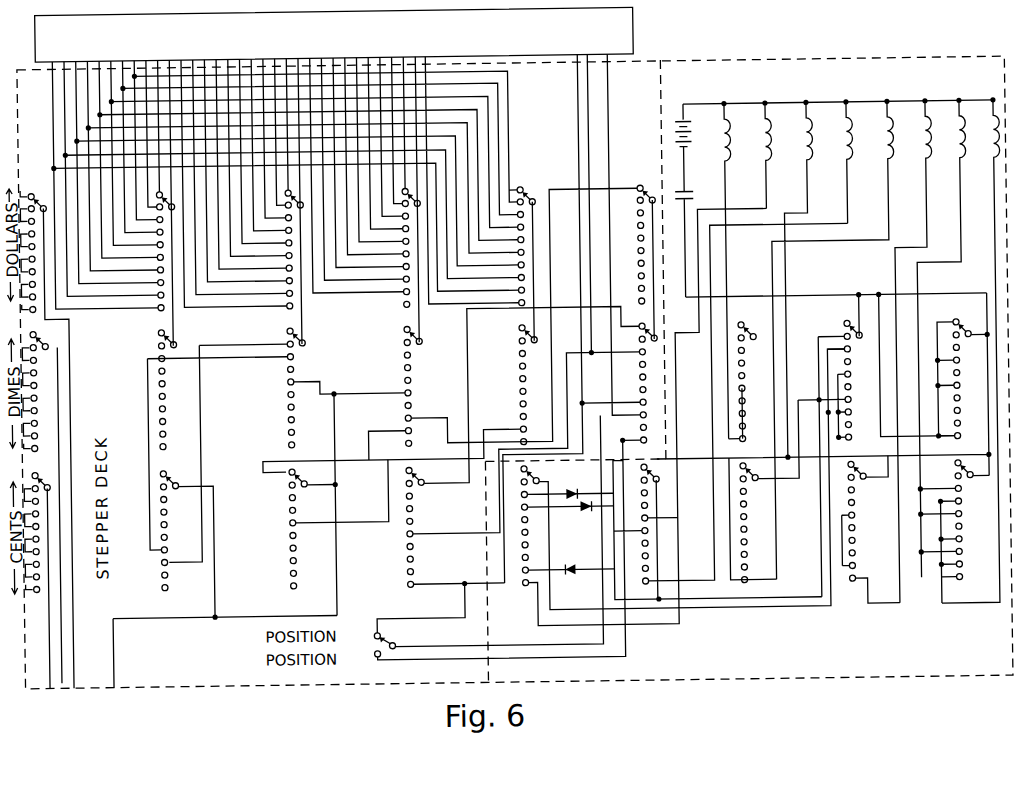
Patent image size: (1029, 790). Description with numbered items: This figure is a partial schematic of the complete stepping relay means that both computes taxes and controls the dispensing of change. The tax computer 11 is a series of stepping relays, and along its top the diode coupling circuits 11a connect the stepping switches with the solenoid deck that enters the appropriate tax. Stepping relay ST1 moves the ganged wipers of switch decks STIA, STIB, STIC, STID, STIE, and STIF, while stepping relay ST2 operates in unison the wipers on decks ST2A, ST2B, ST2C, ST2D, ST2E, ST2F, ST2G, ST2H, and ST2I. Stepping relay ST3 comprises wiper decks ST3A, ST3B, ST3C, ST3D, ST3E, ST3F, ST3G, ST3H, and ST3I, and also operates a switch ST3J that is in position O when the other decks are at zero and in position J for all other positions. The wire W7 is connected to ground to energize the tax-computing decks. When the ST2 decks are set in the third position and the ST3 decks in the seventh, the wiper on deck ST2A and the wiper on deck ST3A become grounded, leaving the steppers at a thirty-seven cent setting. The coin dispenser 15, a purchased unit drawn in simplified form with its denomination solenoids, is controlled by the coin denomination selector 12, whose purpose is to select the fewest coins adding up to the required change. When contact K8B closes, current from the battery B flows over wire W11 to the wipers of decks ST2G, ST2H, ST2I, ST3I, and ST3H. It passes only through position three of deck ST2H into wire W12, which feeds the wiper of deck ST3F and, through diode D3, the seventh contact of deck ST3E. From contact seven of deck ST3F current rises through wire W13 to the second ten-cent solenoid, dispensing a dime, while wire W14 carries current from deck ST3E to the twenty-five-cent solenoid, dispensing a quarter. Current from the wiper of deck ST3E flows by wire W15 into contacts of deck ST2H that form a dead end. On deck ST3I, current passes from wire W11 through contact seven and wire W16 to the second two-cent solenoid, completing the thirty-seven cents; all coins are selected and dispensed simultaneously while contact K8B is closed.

The diode coupling circuits 11a is at (516, 44).
The tax computer 11 is at (360, 387).
The coin denomination selector 12 is at (911, 662).
The coin dispenser 15 is at (970, 92).
The battery B is at (680, 118).
The contact K8B is at (700, 244).
The diode D3 is at (577, 574).
The wire W7 is at (178, 617).
The wire W11 is at (830, 299).
The wire W12 is at (818, 540).
The wire W13 is at (711, 403).
The wire W14 is at (679, 347).
The wire W15 is at (829, 586).
The wire W16 is at (917, 523).
The switch deck ST1A STIA is at (35, 245).
The switch deck ST1B STIB is at (162, 244).
The switch deck ST1C STIC is at (288, 242).
The switch deck ST1D STID is at (410, 240).
The switch deck ST1E STIE is at (526, 239).
The switch deck ST1F STIF is at (635, 237).
The deck ST2A is at (41, 384).
The deck ST2B is at (218, 443).
The deck ST2C is at (347, 461).
The deck ST2D is at (417, 390).
The deck ST2E is at (400, 388).
The deck ST2F is at (598, 481).
The deck ST2G is at (748, 372).
The deck ST2H is at (830, 368).
The deck ST2I is at (961, 368).
The deck ST3A is at (43, 523).
The deck ST3B is at (189, 536).
The deck ST3C is at (339, 520).
The deck ST3D is at (508, 469).
The deck ST3E is at (682, 416).
The deck ST3F is at (745, 411).
The deck ST3G is at (764, 491).
The deck ST3H is at (871, 530).
The deck ST3I is at (957, 531).
The switch ST3J is at (397, 646).